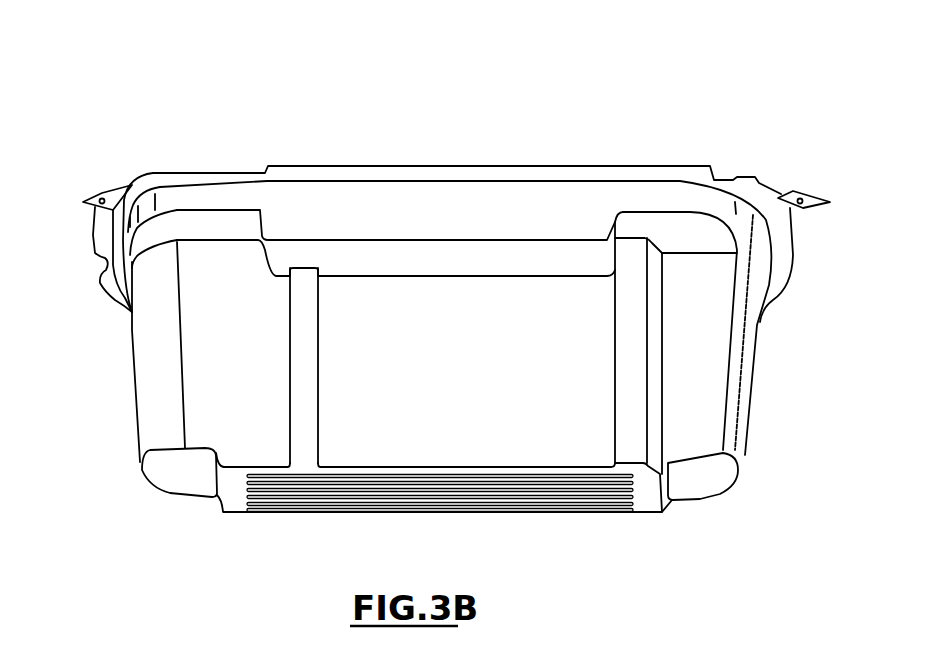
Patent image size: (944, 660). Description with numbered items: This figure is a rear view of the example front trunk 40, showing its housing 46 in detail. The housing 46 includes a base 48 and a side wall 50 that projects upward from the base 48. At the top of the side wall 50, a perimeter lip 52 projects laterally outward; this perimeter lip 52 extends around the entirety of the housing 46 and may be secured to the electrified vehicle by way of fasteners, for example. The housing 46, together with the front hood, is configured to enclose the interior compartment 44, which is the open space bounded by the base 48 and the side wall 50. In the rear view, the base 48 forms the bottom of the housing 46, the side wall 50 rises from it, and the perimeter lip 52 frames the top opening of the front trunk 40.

The panel assembly 40 is at (330, 108).
The perimeter lip 52 is at (143, 175).
The side wall 50 is at (132, 347).
The housing 46 is at (110, 404).
The interior compartment 44 is at (461, 374).
The base 48 is at (382, 513).